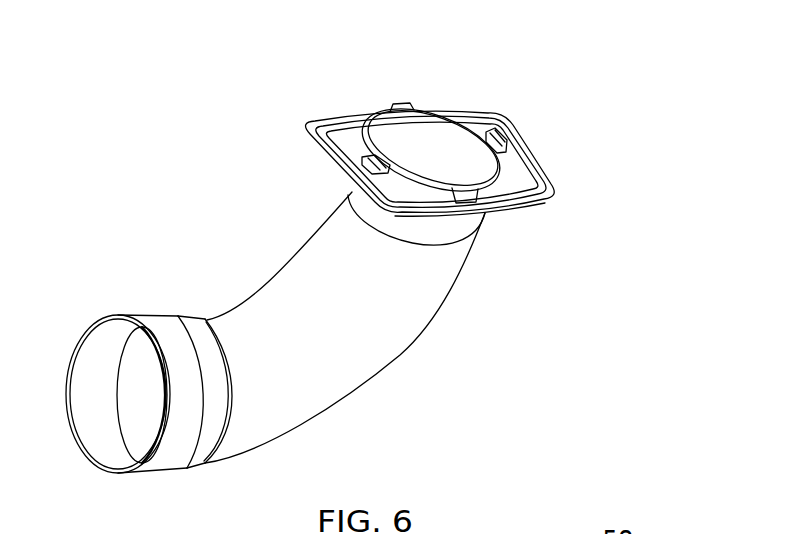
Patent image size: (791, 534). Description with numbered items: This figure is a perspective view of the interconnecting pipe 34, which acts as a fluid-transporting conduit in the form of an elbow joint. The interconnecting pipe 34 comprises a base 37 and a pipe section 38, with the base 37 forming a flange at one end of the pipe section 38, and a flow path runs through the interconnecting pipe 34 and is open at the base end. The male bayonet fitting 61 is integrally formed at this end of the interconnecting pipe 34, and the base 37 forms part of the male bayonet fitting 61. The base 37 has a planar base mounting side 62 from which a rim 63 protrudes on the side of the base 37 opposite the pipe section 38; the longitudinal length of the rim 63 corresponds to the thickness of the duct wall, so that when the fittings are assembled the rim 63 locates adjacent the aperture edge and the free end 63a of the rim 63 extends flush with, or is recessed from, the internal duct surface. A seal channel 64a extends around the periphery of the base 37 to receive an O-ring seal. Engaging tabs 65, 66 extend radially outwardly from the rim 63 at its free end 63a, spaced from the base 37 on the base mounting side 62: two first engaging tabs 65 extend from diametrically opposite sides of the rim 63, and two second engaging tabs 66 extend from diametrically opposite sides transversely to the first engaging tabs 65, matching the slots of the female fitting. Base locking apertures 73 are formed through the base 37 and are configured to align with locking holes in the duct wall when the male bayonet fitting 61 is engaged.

The interconnecting pipe 34 is at (273, 310).
The base 37 is at (518, 207).
The pipe section 38 is at (412, 313).
The male bayonet fitting 61 is at (522, 84).
The base mounting side 62 is at (513, 185).
The rim 63 is at (375, 118).
The free end of the rim 63a is at (452, 113).
The seal channel 64a is at (552, 195).
The first engaging tabs 65 is at (360, 158).
The second engaging tabs 66 is at (402, 105).
The base locking apertures 73 is at (347, 192).